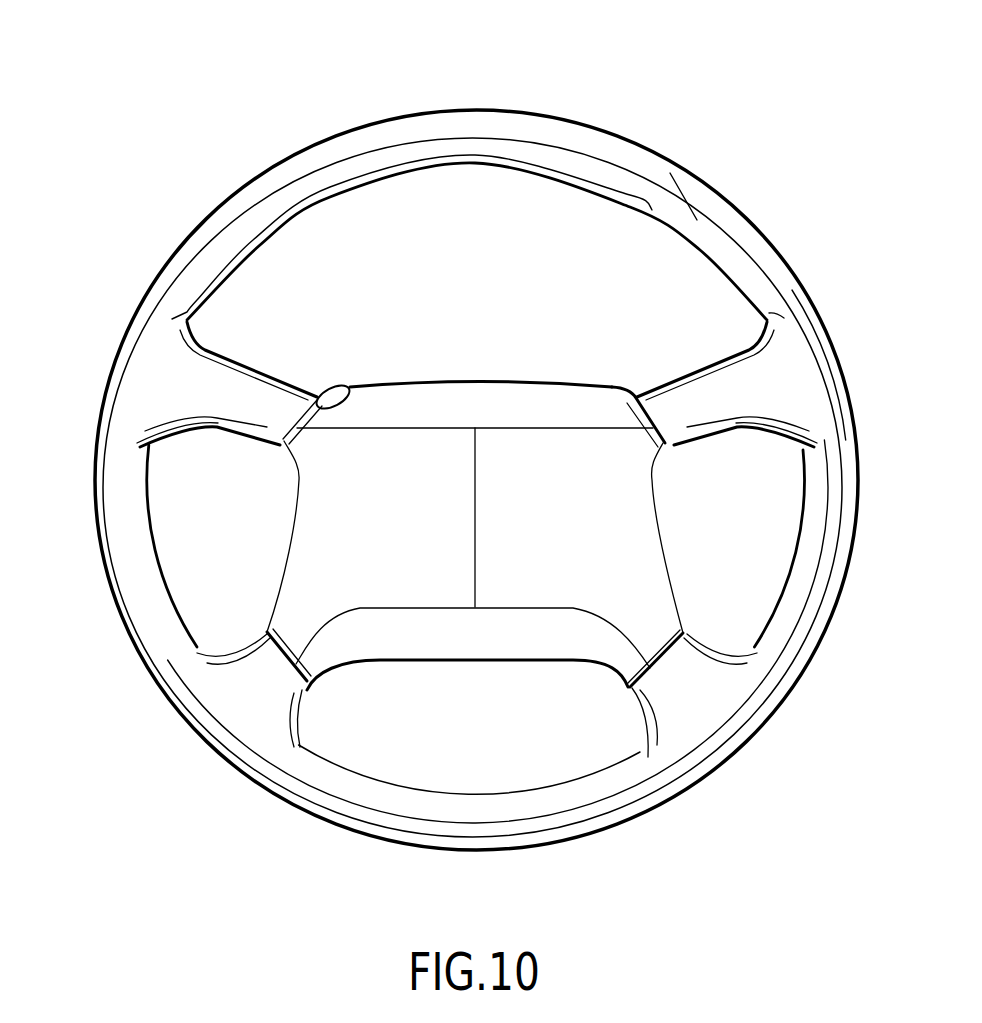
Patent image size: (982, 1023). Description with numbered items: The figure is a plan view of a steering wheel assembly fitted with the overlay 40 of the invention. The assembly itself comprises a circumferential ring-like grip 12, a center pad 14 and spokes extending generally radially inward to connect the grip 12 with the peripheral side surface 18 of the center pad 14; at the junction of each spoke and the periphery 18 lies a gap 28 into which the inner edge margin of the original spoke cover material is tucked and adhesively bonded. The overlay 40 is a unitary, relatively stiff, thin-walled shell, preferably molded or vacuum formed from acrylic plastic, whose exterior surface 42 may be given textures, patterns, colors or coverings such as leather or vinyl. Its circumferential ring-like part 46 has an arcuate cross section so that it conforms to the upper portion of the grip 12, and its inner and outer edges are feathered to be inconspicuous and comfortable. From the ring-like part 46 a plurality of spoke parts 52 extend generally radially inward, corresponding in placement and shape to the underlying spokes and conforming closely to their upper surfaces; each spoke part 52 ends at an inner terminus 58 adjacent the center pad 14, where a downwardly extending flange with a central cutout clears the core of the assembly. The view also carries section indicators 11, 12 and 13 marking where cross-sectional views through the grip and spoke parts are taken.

The section line 11- 11 is at (103, 363).
The grip 12 is at (475, 102).
The section line 13- 13 is at (695, 357).
The center pad 14 is at (405, 538).
The peripheral side surface 18 is at (480, 382).
The gap 28 is at (320, 394).
The overlay 40 is at (800, 300).
The exterior surface 42 is at (735, 262).
The ring-like part 46 is at (855, 406).
The spoke part 52 is at (217, 407).
The inner terminus 58 is at (333, 393).